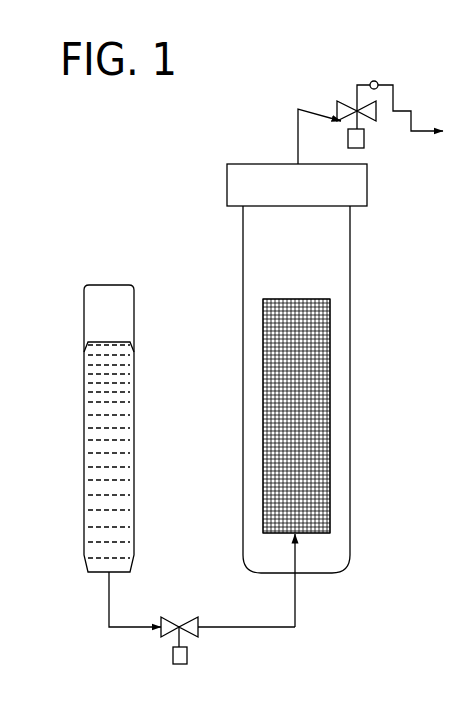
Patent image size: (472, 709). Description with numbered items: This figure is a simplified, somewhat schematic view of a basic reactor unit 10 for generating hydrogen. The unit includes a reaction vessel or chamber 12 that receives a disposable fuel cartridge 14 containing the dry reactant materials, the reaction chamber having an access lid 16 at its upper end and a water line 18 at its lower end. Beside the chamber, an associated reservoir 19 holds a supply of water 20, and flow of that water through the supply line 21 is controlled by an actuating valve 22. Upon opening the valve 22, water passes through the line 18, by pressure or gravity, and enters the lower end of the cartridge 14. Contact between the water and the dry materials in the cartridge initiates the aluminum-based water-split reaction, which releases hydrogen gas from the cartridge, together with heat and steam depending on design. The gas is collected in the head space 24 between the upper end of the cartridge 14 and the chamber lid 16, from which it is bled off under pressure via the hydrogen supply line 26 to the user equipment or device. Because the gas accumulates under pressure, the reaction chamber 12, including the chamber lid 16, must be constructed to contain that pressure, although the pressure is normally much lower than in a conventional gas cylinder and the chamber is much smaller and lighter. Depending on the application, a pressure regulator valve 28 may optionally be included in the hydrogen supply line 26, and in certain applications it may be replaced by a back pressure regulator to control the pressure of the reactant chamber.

The reactor unit 10 is at (113, 181).
The reaction vessel 12 is at (351, 320).
The fuel cartridge 14 is at (307, 396).
The access lid 16 is at (215, 176).
The water line 18 is at (305, 584).
The reservoir 19 is at (80, 402).
The water 20 is at (117, 414).
The supply line 21 is at (228, 616).
The actuating valve 22 is at (158, 645).
The head space 24 is at (305, 263).
The hydrogen supply line 26 is at (288, 120).
The pressure regulator valve 28 is at (345, 97).